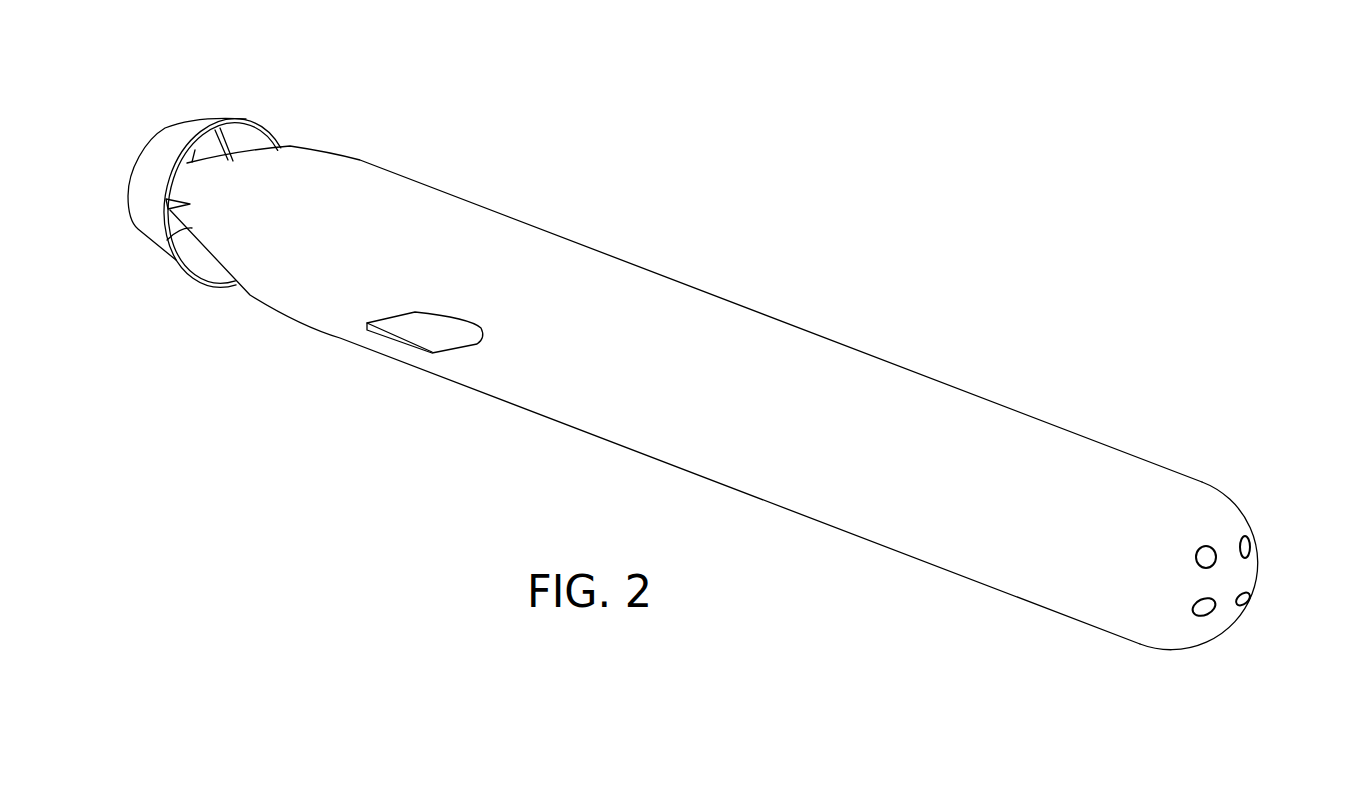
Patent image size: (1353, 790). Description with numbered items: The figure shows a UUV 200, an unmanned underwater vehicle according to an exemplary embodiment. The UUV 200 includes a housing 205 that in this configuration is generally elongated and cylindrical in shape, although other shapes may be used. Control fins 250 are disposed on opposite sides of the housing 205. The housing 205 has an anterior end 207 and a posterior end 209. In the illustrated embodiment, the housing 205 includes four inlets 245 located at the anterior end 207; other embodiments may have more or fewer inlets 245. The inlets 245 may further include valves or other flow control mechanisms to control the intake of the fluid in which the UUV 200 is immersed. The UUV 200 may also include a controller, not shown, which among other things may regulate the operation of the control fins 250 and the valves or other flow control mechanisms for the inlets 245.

The UUV 200 is at (840, 237).
The housing 205 is at (1036, 452).
The anterior end 207 is at (1230, 572).
The posterior end 209 is at (138, 156).
The inlets 245 is at (1213, 553).
The control fins 250 is at (453, 342).